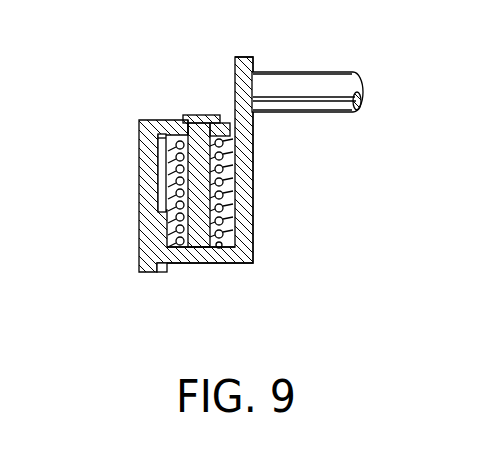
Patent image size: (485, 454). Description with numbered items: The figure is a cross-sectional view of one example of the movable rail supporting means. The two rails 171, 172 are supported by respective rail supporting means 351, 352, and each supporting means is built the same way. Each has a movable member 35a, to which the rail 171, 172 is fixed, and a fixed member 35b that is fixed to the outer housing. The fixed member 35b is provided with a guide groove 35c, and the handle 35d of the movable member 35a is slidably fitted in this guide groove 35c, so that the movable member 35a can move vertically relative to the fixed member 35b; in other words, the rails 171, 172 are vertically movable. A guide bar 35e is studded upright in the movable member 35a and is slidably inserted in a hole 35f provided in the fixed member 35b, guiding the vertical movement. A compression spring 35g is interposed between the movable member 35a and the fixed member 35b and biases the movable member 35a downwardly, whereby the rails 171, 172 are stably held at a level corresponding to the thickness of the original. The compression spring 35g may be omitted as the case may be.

The rail 171 is at (320, 65).
The rail 172 is at (305, 90).
The rail supporting means 351 is at (226, 183).
The rail supporting means 352 is at (261, 256).
The movable member 35a is at (256, 165).
The fixed member 35b is at (139, 152).
The guide groove 35c is at (162, 272).
The handle 35d is at (166, 249).
The guide bar 35e is at (202, 118).
The hole 35f is at (189, 128).
The compression spring 35g is at (165, 181).